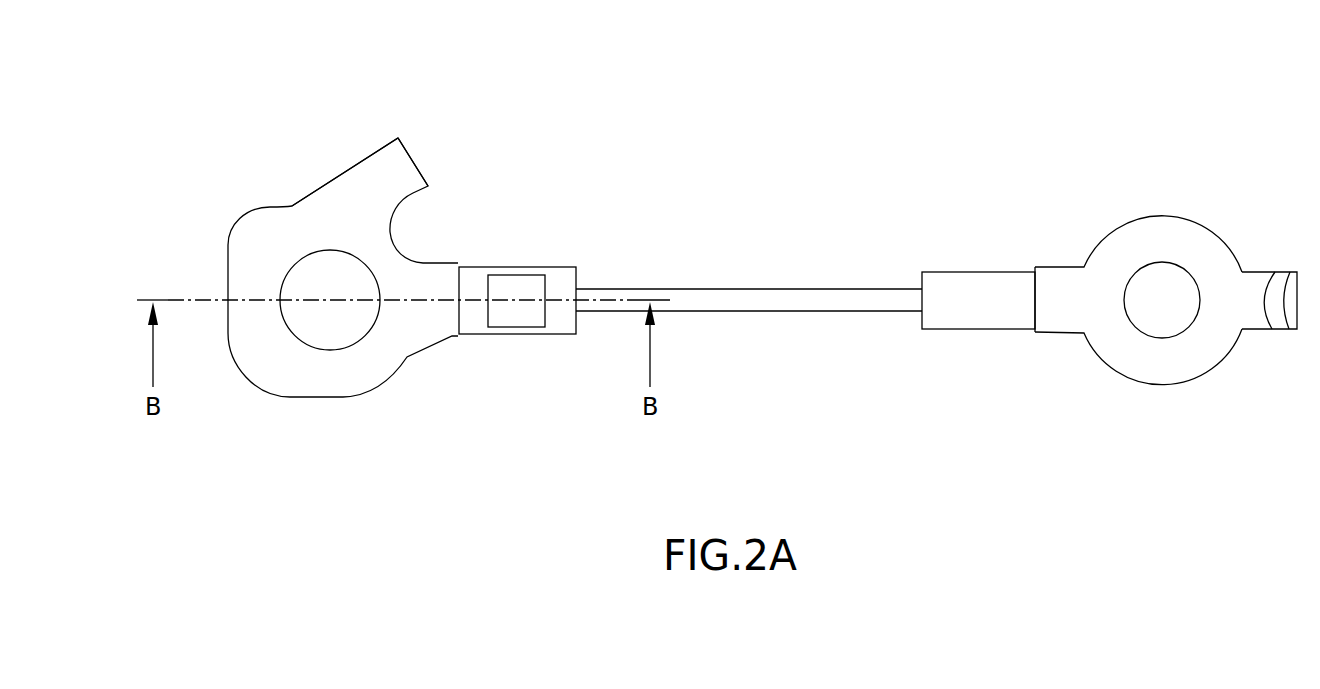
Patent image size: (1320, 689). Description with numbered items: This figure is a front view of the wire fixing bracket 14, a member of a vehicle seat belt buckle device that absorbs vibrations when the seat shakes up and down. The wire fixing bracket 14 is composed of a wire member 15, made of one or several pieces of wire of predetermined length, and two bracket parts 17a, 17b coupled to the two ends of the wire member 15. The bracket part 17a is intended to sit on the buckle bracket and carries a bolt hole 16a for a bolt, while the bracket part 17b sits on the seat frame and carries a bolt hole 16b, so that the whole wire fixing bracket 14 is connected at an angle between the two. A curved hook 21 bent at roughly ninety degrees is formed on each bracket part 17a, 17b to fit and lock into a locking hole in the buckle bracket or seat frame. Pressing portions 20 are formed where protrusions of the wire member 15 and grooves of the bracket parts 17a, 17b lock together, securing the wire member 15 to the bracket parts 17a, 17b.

The wire fixing bracket 14 is at (720, 232).
The wire member 15 is at (861, 297).
The bolt hole 16a is at (1152, 305).
The bolt hole 16b is at (310, 323).
The bracket part 17a is at (1108, 252).
The bracket part 17b is at (383, 250).
The pressing portion 20 is at (519, 313).
The curved hook 21 is at (403, 168).